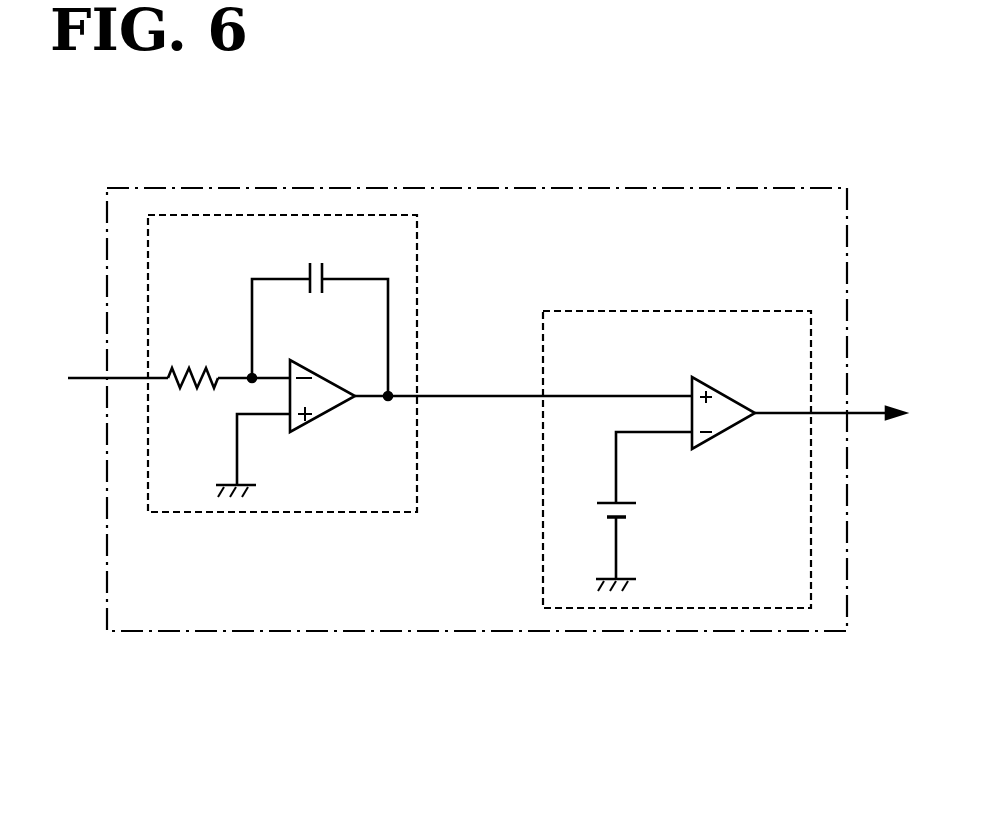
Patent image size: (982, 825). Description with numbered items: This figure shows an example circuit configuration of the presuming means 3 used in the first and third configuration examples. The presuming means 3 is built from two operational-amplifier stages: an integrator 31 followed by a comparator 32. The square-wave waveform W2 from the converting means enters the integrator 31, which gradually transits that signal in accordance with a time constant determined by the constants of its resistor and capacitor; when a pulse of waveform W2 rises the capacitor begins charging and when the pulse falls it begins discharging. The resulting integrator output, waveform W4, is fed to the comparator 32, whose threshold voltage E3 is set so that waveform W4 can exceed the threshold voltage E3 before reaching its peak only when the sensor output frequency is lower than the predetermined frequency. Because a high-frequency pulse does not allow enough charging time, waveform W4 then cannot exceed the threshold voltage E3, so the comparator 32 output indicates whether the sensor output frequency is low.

The presuming means 3 is at (785, 188).
The integrator 31 is at (327, 513).
The comparator 32 is at (724, 433).
The waveform W2 is at (96, 379).
The waveform W4 is at (523, 380).
The threshold voltage E3 is at (596, 543).